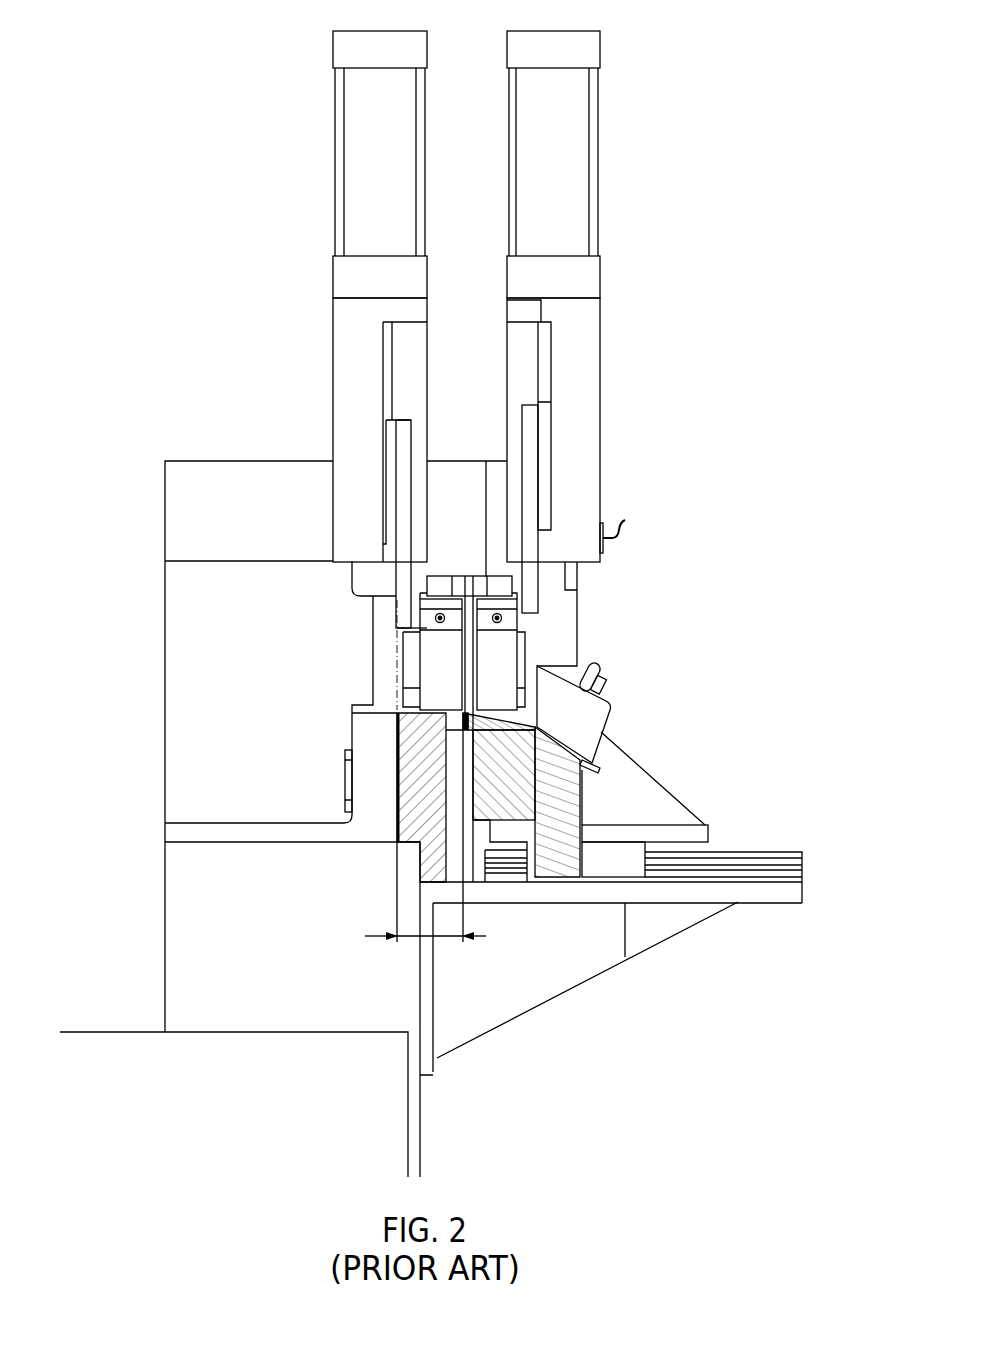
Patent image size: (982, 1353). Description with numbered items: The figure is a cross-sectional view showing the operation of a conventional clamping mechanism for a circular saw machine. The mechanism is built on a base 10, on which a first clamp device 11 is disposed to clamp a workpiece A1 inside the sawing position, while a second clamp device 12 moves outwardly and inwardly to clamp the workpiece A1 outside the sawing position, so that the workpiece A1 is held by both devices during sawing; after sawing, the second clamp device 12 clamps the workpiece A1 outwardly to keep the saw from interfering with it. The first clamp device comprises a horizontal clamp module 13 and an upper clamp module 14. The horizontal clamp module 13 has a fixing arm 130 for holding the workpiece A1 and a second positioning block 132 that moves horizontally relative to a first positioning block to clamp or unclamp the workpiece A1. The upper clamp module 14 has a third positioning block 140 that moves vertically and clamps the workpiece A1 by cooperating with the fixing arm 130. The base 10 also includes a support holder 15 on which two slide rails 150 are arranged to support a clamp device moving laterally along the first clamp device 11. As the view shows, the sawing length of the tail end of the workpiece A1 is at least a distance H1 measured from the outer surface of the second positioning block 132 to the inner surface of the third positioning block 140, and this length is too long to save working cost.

The base 10 is at (413, 1133).
The first clamp device 11 is at (260, 367).
The second clamp device 12 is at (685, 367).
The horizontal clamp module 13 is at (420, 613).
The upper clamp module 14 is at (340, 318).
The support holder 15 is at (575, 970).
The fixing arm 130 is at (407, 777).
The second positioning block 132 is at (425, 627).
The third positioning block 140 is at (405, 517).
The slide rails 150 is at (748, 873).
The workpiece A1 is at (395, 658).
The distance H1 is at (425, 892).